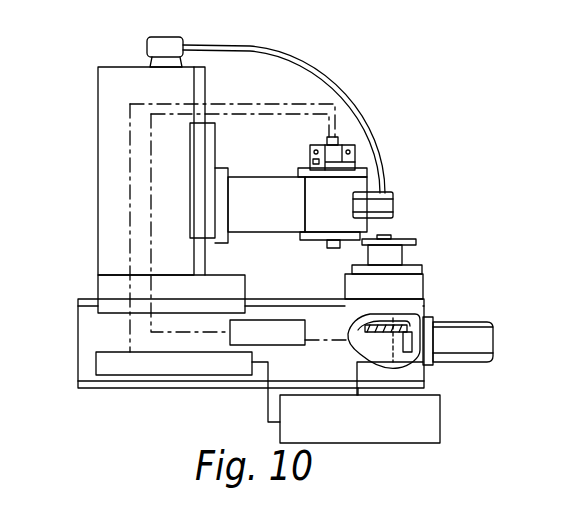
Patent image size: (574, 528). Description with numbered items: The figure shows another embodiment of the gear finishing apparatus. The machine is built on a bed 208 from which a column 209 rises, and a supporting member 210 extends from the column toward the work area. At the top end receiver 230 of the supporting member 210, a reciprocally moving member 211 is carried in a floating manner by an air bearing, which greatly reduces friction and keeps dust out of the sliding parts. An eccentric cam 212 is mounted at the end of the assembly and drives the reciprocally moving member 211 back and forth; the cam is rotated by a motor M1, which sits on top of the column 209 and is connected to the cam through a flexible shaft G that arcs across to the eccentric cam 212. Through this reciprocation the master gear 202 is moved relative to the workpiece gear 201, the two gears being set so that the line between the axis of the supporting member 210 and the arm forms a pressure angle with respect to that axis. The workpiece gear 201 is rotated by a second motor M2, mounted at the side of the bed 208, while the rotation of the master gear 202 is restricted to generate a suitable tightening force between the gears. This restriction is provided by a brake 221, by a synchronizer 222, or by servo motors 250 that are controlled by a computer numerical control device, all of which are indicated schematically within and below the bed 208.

The motor M1 is at (152, 50).
The flexible shaft G is at (364, 110).
The column 209 is at (98, 204).
The reciprocally moving member 211 is at (295, 240).
The supporting member 210 is at (281, 216).
The top end receiver 230 is at (343, 210).
The eccentric cam 212 is at (390, 192).
The master gear 202 is at (322, 247).
The workpiece gear 201 is at (404, 240).
The bed 208 is at (84, 342).
The brake 221 is at (275, 320).
The synchronizer 222 is at (180, 383).
The servo motors 250 is at (441, 428).
The motor M2 is at (472, 332).